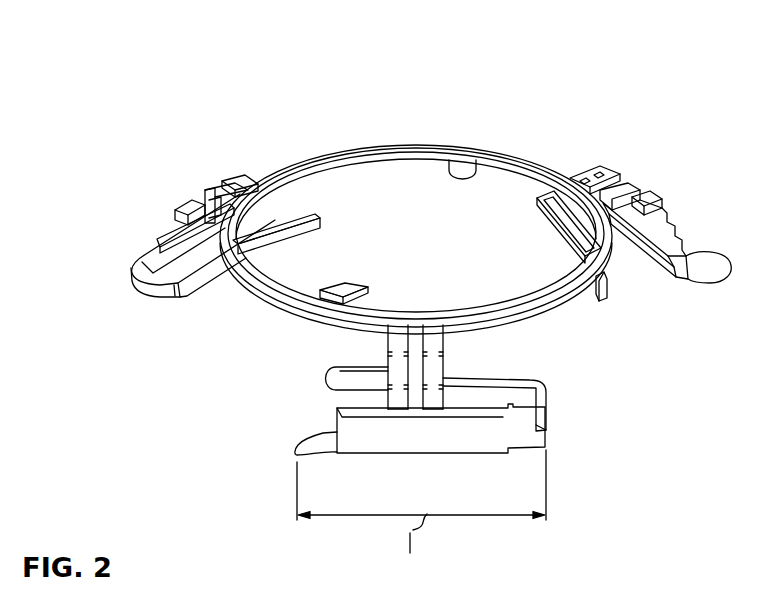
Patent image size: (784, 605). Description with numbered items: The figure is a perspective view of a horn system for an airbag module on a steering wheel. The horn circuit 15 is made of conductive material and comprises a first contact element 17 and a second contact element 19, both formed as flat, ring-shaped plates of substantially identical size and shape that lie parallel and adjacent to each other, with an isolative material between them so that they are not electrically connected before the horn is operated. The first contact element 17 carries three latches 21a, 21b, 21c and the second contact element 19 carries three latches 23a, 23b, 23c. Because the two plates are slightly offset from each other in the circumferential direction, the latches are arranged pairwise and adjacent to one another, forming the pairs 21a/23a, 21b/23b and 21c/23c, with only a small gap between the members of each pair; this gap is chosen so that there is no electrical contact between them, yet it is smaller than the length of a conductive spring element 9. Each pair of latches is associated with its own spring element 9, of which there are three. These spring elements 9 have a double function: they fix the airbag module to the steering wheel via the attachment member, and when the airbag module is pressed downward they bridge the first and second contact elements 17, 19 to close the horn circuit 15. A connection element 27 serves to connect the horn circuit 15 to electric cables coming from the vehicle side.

The spring element 9 is at (157, 261).
The horn circuit 15 is at (520, 146).
The first contact element 17 is at (376, 150).
The second contact element 19 is at (476, 160).
The latch 21a is at (212, 187).
The latch 21b is at (600, 166).
The latch 21c is at (434, 363).
The latch 23a is at (246, 181).
The latch 23b is at (644, 208).
The latch 23c is at (397, 399).
The connection element 27 is at (346, 291).